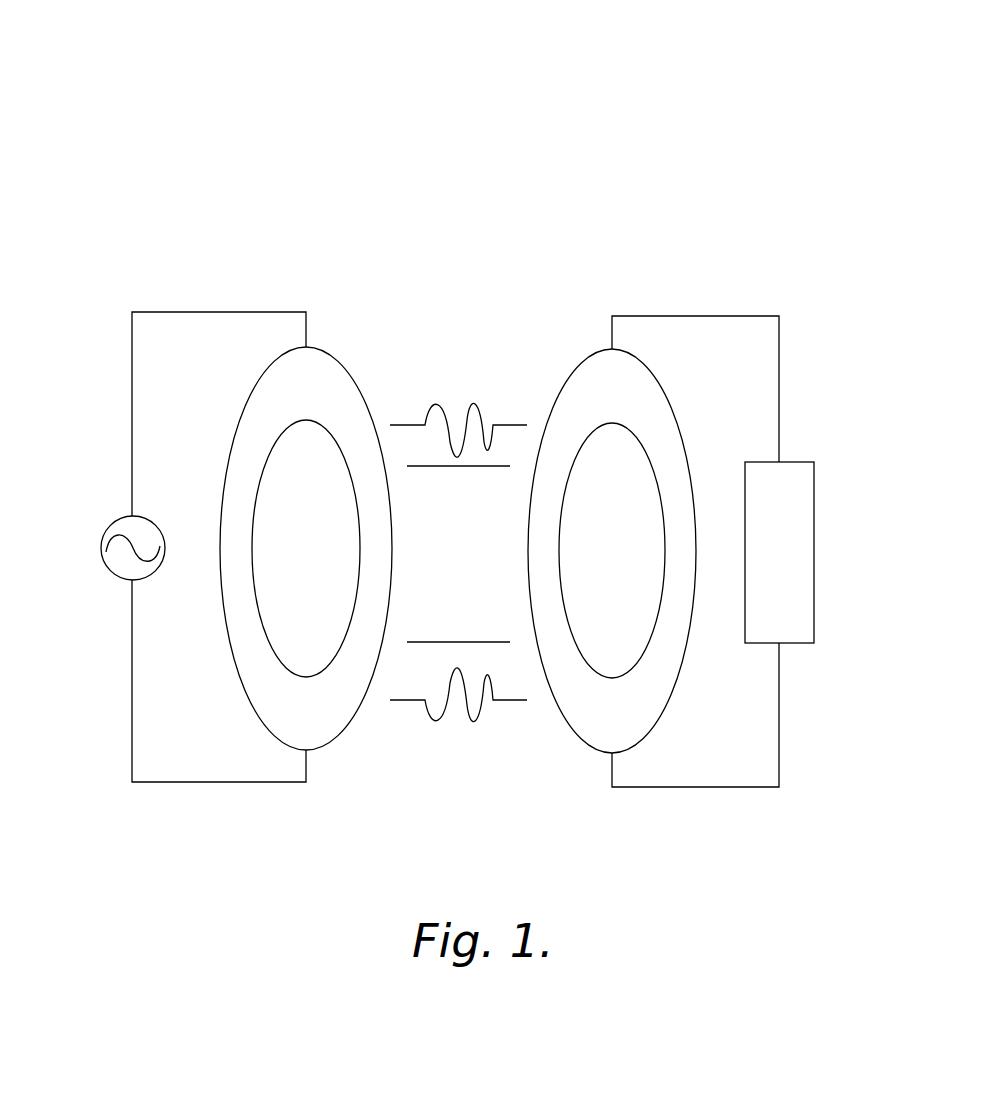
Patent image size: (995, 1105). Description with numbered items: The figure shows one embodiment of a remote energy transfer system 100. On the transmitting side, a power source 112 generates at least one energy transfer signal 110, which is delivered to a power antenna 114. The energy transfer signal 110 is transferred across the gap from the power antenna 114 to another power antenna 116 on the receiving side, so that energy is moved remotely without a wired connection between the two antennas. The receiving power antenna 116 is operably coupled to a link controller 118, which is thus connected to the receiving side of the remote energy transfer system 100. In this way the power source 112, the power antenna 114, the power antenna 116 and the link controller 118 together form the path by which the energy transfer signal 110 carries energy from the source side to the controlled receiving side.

The remote energy transfer system 100 is at (558, 187).
The energy transfer signal 110 is at (432, 403).
The power source 112 is at (117, 578).
The power antenna 114 is at (328, 742).
The power antenna 116 is at (577, 735).
The link controller 118 is at (814, 643).